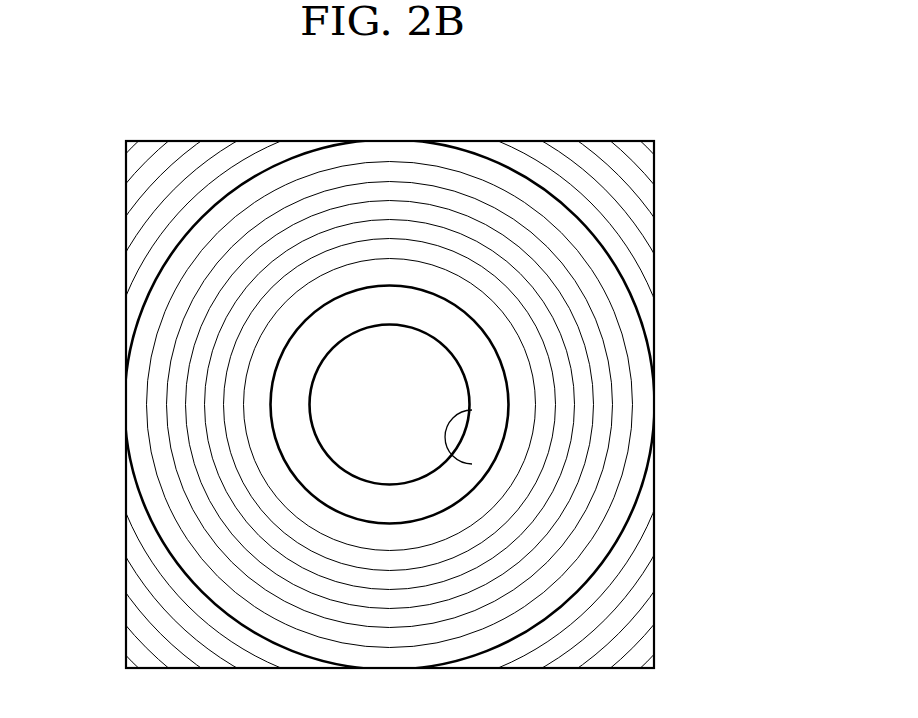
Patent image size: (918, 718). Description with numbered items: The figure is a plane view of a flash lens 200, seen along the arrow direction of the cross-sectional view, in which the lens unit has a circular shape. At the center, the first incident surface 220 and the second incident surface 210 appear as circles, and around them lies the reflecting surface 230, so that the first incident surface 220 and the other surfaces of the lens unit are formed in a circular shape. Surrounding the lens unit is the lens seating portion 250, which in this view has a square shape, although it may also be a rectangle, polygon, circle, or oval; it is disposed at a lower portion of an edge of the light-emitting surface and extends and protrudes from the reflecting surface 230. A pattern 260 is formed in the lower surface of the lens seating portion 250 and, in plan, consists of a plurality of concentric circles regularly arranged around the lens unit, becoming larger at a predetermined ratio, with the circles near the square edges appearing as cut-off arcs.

The flash lens 200 is at (680, 236).
The second incident surface 210 is at (472, 464).
The first incident surface 220 is at (338, 436).
The reflecting surface 230 is at (525, 390).
The lens seating portion 250 is at (126, 318).
The pattern 260 is at (157, 417).